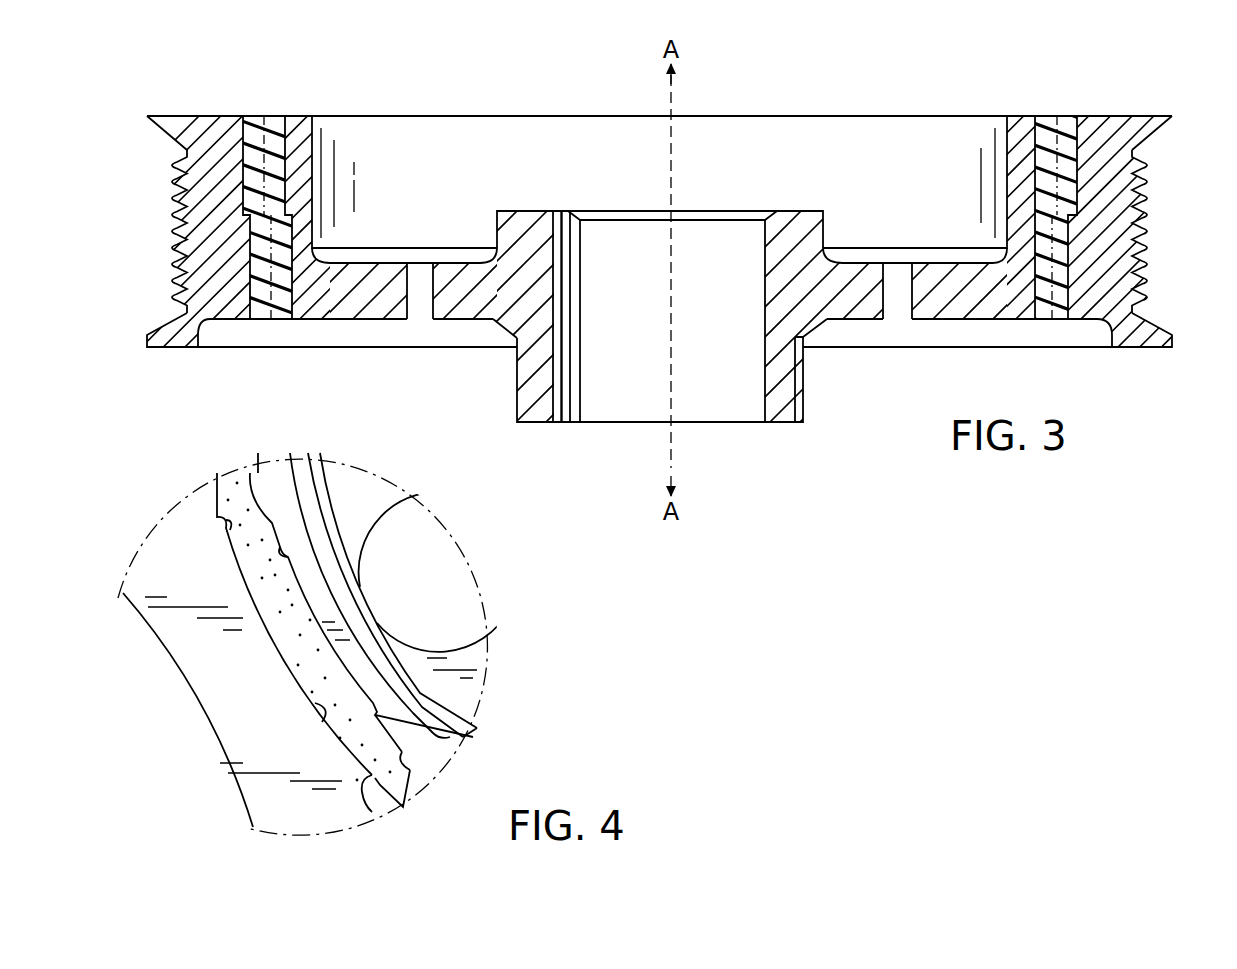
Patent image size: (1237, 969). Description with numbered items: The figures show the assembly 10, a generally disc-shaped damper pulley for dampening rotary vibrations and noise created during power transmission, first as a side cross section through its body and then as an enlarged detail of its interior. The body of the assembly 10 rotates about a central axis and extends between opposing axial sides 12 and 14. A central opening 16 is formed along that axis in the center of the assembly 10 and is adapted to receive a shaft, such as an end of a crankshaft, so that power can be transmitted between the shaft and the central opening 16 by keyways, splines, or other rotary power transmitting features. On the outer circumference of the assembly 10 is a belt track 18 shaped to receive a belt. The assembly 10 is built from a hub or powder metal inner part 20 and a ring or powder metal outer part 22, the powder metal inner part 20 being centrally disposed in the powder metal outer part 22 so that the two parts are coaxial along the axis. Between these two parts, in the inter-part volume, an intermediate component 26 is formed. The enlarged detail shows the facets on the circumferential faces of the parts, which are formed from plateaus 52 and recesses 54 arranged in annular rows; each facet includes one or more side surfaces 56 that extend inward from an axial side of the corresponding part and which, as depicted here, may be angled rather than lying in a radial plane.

In FIG. 3, the assembly 10 is at (1177, 88).
In FIG. 3, the axial side 12 is at (848, 395).
In FIG. 3, the axial side 14 is at (893, 102).
In FIG. 3, the central opening 16 is at (712, 395).
In FIG. 3, the belt track 18 is at (1172, 243).
In FIG. 3, the powder metal inner part 20 is at (795, 228).
In FIG. 4, the powder metal inner part 20 is at (470, 697).
In FIG. 3, the powder metal outer part 22 is at (1113, 297).
In FIG. 4, the powder metal outer part 22 is at (345, 823).
In FIG. 3, the intermediate component 26 is at (1047, 133).
In FIG. 4, the intermediate component 26 is at (413, 786).
In FIG. 4, the plateaus 52 is at (218, 472).
In FIG. 4, the recesses 54 is at (259, 473).
In FIG. 4, the side surfaces 56 is at (283, 548).